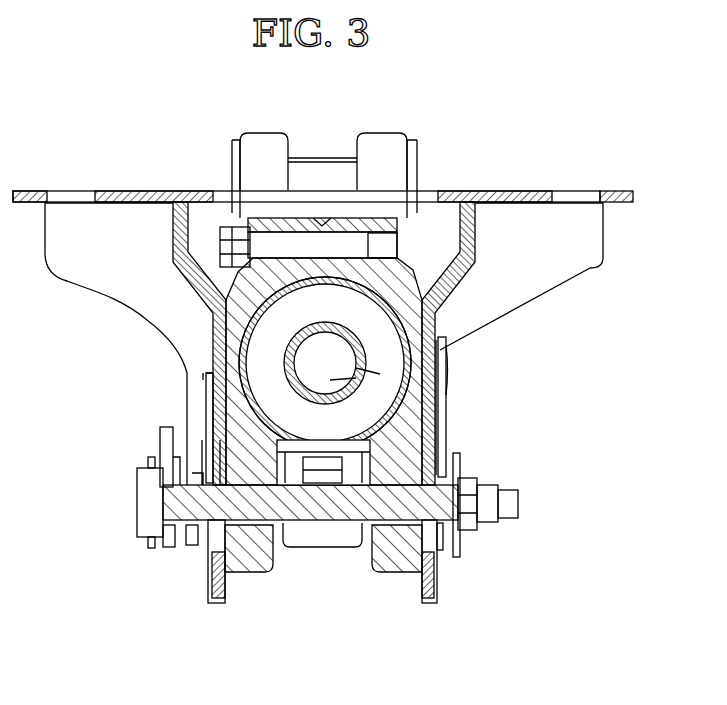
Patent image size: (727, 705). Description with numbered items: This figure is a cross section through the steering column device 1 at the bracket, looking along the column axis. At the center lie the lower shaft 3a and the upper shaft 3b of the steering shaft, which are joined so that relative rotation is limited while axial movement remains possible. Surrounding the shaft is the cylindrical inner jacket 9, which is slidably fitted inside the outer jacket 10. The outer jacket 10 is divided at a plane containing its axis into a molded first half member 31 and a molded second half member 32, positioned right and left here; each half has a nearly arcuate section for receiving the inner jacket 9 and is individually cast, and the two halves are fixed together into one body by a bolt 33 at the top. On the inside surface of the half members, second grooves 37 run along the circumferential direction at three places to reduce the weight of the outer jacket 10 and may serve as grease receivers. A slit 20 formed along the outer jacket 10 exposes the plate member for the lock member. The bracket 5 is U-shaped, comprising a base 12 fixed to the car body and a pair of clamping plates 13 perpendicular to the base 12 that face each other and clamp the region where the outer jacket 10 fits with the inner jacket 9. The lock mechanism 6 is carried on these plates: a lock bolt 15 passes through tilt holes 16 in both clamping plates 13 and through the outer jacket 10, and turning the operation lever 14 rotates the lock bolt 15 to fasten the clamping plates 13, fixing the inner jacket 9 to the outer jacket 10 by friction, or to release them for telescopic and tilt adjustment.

The steering column device 1 is at (596, 344).
The lower shaft 3a is at (330, 378).
The upper shaft 3b is at (365, 373).
The bracket 5 is at (520, 191).
The lock mechanism 6 is at (130, 560).
The inner jacket 9 is at (443, 358).
The outer jacket 10 is at (437, 302).
The base 12 is at (625, 191).
The clamping plates 13 is at (212, 405).
The operation lever 14 is at (167, 550).
The lock bolt 15 is at (385, 512).
The tilt hole 16 is at (200, 461).
The slit 20 is at (282, 527).
The molded first half member 31 is at (594, 268).
The molded second half member 32 is at (210, 368).
The bolt 33 is at (220, 243).
The second groove 37 is at (410, 272).